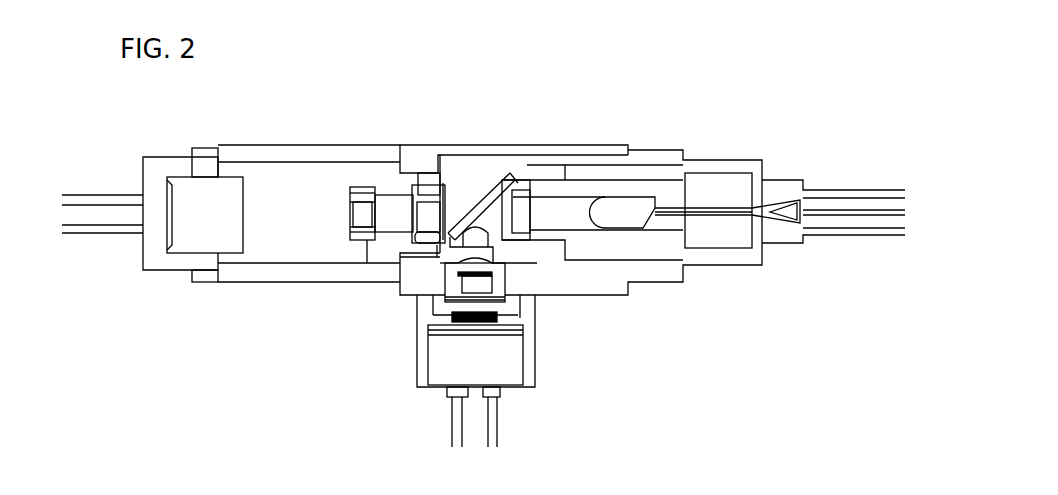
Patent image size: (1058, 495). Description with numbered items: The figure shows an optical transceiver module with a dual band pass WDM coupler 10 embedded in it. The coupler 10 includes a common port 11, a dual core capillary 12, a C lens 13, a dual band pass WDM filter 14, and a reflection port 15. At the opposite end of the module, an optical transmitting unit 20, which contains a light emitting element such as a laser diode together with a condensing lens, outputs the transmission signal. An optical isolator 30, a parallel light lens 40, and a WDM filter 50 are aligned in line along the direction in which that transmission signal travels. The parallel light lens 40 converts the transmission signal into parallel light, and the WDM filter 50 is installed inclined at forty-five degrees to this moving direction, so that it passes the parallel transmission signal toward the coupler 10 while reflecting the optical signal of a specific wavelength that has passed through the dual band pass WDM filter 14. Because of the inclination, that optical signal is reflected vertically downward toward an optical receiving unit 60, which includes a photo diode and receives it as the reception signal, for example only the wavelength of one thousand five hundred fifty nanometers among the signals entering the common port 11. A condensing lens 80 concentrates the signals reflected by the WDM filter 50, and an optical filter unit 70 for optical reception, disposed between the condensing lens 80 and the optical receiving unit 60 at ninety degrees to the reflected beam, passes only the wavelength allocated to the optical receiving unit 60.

The dual band pass WDM coupler 10 is at (743, 146).
The common port 11 is at (825, 202).
The dual core capillary 12 is at (677, 200).
The C lens 13 is at (597, 200).
The dual band pass WDM filter 14 is at (522, 193).
The reflection port 15 is at (827, 223).
The optical transmitting unit 20 is at (198, 183).
The optical isolator 30 is at (360, 187).
The parallel light lens 40 is at (425, 197).
The WDM filter 50 is at (488, 190).
The optical receiving unit 60 is at (443, 348).
The optical filter unit for optical reception 70 is at (460, 322).
The condensing lens 80 is at (458, 293).